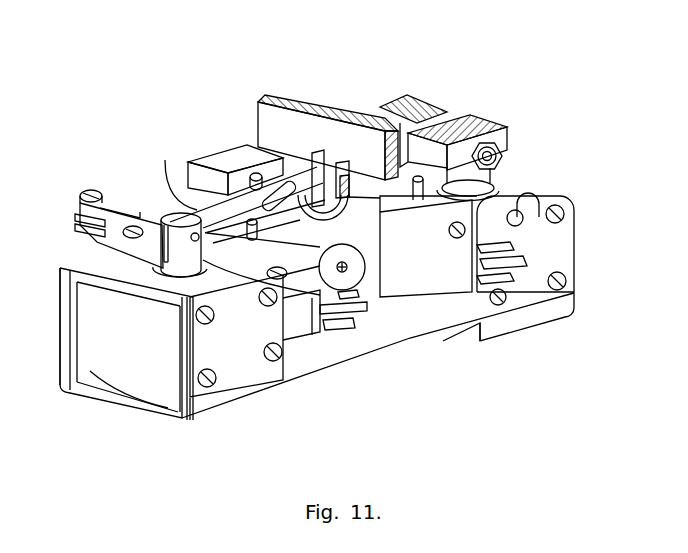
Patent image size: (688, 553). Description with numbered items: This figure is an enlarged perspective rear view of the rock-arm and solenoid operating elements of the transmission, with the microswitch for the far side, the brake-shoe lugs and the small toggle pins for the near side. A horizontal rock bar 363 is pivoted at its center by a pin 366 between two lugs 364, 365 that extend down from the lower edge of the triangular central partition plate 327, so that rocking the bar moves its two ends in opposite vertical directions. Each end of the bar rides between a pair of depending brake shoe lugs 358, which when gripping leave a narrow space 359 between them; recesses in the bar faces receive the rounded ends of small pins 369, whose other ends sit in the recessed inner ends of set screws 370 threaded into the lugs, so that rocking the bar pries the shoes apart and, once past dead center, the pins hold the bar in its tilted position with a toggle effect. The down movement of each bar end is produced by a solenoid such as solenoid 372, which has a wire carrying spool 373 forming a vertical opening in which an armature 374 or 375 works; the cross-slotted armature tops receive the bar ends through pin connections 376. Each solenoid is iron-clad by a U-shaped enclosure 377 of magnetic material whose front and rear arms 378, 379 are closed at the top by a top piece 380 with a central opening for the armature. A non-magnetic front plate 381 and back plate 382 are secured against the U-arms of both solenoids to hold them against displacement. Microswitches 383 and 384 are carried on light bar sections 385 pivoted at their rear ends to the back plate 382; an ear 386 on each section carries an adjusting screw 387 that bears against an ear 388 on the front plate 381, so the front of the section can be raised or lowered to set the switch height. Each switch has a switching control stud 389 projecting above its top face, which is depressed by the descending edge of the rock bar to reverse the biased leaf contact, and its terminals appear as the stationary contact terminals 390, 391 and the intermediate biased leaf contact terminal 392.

The central partition plate 327 is at (273, 118).
The brake shoe lug 358 is at (220, 156).
The narrow space 359 is at (455, 118).
The rock bar 363 is at (173, 177).
The lug 364 is at (356, 174).
The lug 365 is at (307, 166).
The pin 366 is at (342, 168).
The small pin 369 is at (235, 176).
The set screw 370 is at (504, 149).
The solenoid 372 is at (127, 368).
The wire carrying spool 373 is at (157, 372).
The armature 374 is at (482, 186).
The armature 375 is at (172, 268).
The pin connection 376 is at (193, 241).
The U-shaped enclosure 377 is at (135, 407).
The front arm of U-enclosure 378 is at (77, 348).
The rear arm of U-enclosure 379 is at (192, 405).
The top piece 380 is at (107, 284).
The front plate 381 is at (58, 288).
The back plate 382 is at (357, 347).
The microswitch 383 is at (428, 246).
The microswitch 384 is at (305, 318).
The bar section 385 is at (271, 258).
The ear 386 is at (115, 212).
The adjusting screw 387 is at (88, 189).
The ear 388 is at (95, 228).
The switching control stud 389 is at (256, 226).
The stationary contact terminal 390 is at (348, 295).
The stationary contact terminal 391 is at (348, 327).
The biased leaf contact terminal 392 is at (353, 321).